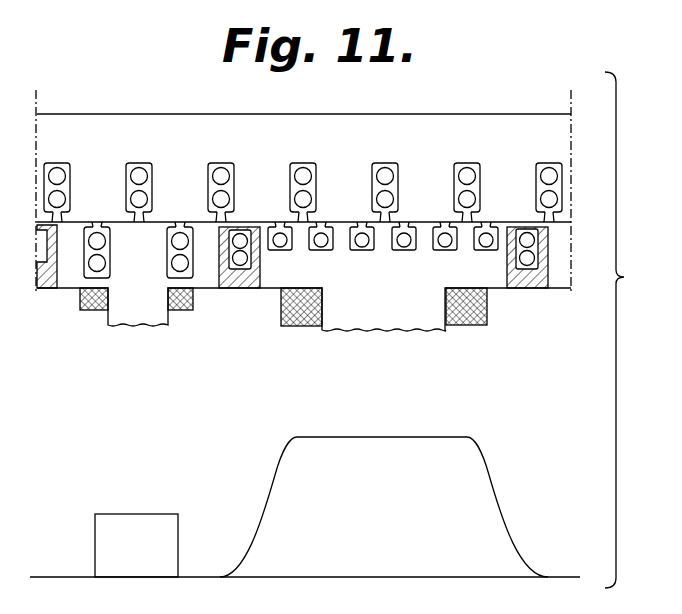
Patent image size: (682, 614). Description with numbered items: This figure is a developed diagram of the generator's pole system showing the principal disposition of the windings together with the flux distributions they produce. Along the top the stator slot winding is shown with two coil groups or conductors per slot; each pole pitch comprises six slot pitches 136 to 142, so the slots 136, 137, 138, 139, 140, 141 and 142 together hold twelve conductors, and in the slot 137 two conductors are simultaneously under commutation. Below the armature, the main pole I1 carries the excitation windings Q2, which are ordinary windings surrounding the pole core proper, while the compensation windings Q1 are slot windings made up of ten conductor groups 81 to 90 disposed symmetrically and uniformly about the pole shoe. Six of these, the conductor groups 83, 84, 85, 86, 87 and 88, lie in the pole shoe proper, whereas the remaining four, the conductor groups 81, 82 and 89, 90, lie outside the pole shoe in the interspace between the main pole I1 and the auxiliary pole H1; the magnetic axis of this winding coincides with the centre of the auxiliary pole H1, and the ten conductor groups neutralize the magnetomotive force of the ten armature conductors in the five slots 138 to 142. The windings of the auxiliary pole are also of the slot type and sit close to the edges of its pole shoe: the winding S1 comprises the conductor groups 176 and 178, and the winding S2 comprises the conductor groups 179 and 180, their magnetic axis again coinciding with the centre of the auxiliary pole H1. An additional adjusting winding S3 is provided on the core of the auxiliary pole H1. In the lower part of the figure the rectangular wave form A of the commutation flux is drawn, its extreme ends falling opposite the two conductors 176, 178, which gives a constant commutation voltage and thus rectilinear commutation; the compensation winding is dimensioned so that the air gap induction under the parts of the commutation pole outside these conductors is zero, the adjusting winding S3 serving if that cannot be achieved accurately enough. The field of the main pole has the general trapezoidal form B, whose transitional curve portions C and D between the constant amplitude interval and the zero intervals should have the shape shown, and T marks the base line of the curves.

The slot pitch 136 is at (57, 183).
The slot 137 is at (139, 183).
The slot 138 is at (221, 183).
The slot 139 is at (303, 183).
The slot 140 is at (385, 183).
The slot 141 is at (467, 183).
The slot 142 is at (549, 183).
The conductor group 176 is at (106, 243).
The conductor group 179 is at (106, 265).
The conductor group 178 is at (189, 241).
The conductor group 180 is at (189, 264).
The conductor group 81 is at (239, 243).
The conductor group 82 is at (240, 262).
The conductor group 83 is at (280, 245).
The conductor group 84 is at (321, 245).
The conductor group 85 is at (362, 245).
The conductor group 86 is at (404, 245).
The conductor group 87 is at (445, 245).
The conductor group 88 is at (486, 245).
The conductor group 89 is at (535, 243).
The conductor group 90 is at (540, 262).
The auxiliary pole winding S1 is at (97, 240).
The auxiliary pole winding S2 is at (90, 268).
The additional adjusting winding S3 is at (180, 308).
The auxiliary pole H1 is at (143, 317).
The main pole I1 is at (386, 320).
The compensation winding Q1 is at (323, 237).
The excitation winding Q2 is at (477, 303).
The commutation flux wave form A is at (136, 533).
The main pole field B is at (375, 437).
The transitional curve portion C is at (267, 488).
The transitional curve portion D is at (508, 508).
The time axis T is at (392, 577).